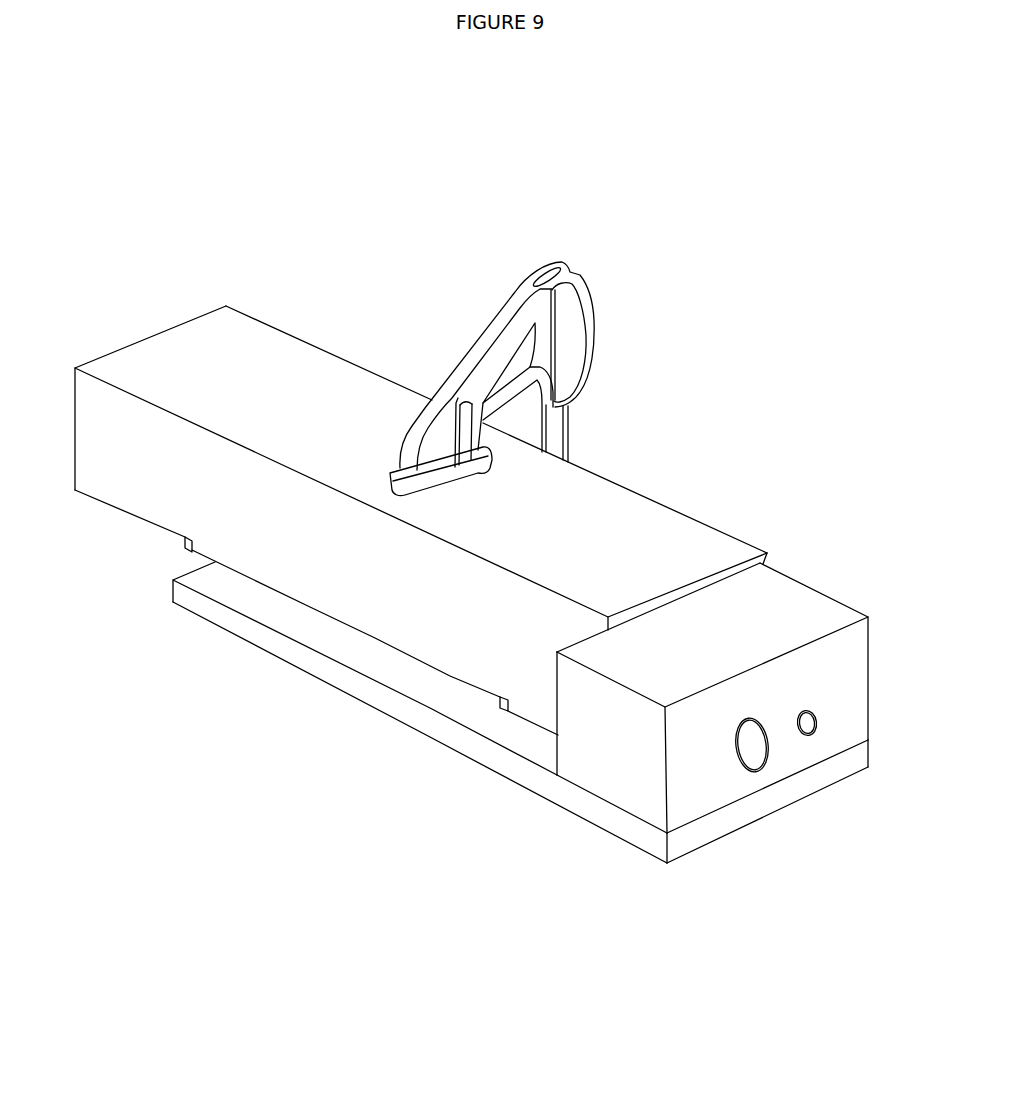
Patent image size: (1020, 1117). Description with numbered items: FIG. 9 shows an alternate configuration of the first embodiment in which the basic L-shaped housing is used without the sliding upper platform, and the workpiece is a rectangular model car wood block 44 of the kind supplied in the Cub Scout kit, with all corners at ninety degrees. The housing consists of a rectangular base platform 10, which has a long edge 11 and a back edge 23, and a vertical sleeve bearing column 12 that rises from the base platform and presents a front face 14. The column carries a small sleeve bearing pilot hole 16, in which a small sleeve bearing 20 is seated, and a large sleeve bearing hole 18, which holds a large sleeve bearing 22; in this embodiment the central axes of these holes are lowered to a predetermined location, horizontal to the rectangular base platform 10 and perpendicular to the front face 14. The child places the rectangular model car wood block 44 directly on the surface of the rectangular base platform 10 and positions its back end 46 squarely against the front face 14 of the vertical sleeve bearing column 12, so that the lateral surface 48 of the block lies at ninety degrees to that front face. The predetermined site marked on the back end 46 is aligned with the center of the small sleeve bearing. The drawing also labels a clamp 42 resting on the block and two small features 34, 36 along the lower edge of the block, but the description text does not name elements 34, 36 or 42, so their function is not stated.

The rectangular base platform 10 is at (401, 678).
The long edge 11 is at (354, 585).
The vertical sleeve bearing column 12 is at (612, 743).
The front face 14 is at (558, 708).
The small sleeve bearing pilot hole 16 is at (811, 711).
The large sleeve bearing hole 18 is at (756, 718).
The small sleeve bearing 20 is at (810, 728).
The large sleeve bearing 22 is at (752, 750).
The back edge 23 is at (723, 822).
The first tab 34 is at (183, 548).
The second tab 36 is at (502, 712).
The handle 42 is at (594, 318).
The rectangular model car wood block 44 is at (585, 508).
The back end 46 is at (700, 582).
The lateral surface 48 is at (257, 637).